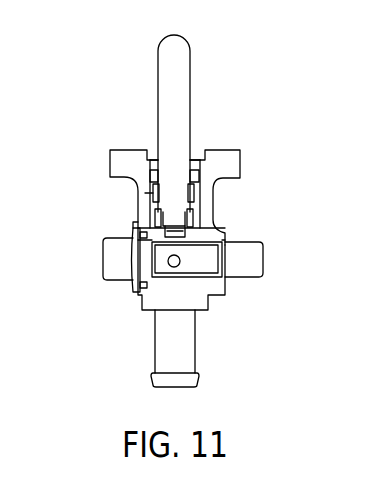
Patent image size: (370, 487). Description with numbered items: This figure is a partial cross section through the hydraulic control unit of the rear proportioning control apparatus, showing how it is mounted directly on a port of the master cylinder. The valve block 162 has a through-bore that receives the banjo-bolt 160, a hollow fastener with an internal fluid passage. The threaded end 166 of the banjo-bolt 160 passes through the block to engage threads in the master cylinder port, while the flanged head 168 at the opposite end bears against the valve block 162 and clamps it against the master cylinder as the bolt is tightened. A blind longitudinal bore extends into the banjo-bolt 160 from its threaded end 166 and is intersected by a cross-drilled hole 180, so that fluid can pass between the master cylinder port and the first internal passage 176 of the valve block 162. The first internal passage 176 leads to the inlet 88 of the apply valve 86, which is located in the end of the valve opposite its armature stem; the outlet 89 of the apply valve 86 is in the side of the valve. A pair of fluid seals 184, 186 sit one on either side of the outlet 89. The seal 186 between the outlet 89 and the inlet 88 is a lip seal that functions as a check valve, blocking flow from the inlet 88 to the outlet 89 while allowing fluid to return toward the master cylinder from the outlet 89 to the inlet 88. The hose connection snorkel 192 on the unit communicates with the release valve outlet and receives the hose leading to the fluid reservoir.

The apply valve 86 is at (182, 163).
The valve block 162 is at (118, 160).
The fluid seal 184 is at (193, 176).
The outlet of the apply valve 89 is at (152, 197).
The inlet of the apply valve 88 is at (160, 223).
The lip seal 186 is at (193, 208).
The first internal passage 176 is at (187, 238).
The banjo-bolt 160 is at (122, 291).
The flanged head 168 is at (115, 257).
The threaded end 166 is at (249, 255).
The cross-drilled hole 180 is at (176, 266).
The hose connection snorkel 192 is at (177, 353).